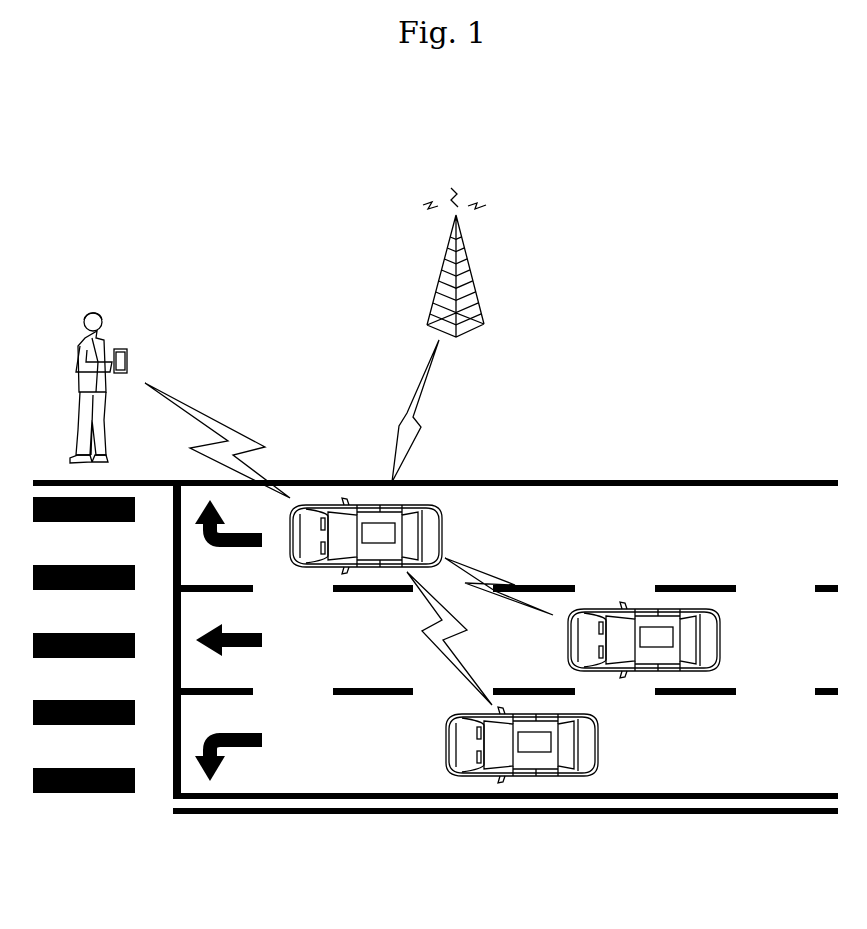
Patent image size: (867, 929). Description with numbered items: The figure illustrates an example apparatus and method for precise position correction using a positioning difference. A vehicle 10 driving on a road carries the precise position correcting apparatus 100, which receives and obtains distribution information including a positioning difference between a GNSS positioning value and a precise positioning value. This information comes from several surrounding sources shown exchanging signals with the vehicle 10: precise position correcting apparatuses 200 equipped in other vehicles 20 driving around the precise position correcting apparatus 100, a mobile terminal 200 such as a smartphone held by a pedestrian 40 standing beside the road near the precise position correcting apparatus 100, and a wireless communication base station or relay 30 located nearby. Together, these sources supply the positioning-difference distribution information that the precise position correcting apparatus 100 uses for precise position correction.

The vehicle 10 is at (430, 505).
The precise position correcting apparatus 100 is at (396, 533).
The vehicles 20 is at (705, 612).
The precise position correcting apparatus / mobile terminal 200 is at (128, 360).
The wireless communication base station or relay 30 is at (472, 250).
The pedestrian 40 is at (100, 318).